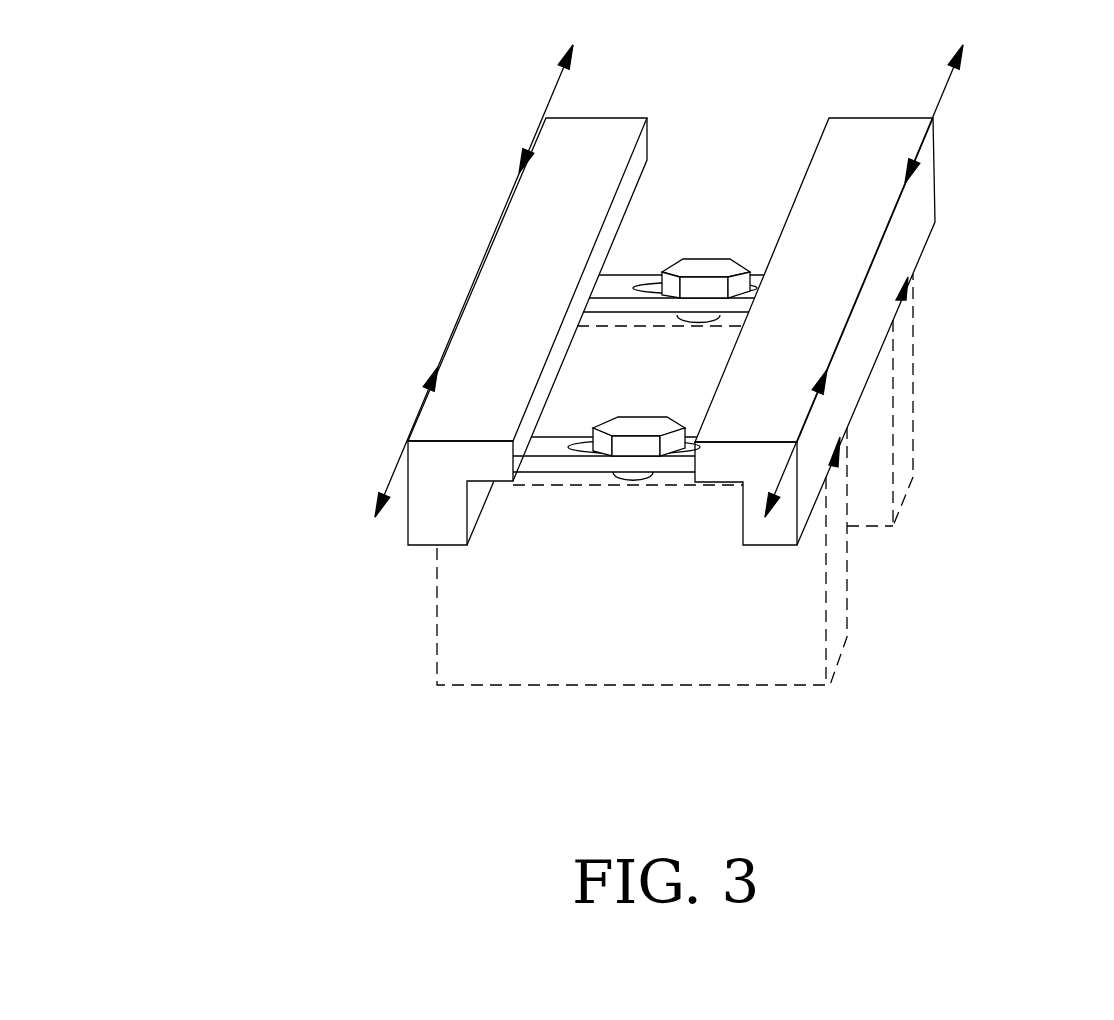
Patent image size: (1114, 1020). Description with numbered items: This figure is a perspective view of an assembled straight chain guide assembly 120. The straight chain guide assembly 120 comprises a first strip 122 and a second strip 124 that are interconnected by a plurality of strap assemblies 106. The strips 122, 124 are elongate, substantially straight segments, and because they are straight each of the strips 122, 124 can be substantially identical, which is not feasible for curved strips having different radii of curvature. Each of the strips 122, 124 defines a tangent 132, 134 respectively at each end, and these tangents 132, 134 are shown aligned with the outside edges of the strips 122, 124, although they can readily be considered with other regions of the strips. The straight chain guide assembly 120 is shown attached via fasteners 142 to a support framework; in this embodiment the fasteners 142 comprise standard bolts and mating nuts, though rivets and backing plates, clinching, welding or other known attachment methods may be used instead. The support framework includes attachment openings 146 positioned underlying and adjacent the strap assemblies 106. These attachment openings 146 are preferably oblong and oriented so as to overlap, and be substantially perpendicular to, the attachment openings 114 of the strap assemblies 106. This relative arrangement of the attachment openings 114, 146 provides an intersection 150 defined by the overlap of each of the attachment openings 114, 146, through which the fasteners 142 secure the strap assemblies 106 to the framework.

The straight chain guide assembly 120 is at (268, 138).
The first strip 122 is at (518, 270).
The second strip 124 is at (912, 241).
The tangent 132 is at (550, 88).
The tangent 134 is at (945, 88).
The strap assembly 106 is at (553, 462).
The attachment opening 114 is at (577, 440).
The fastener 142 is at (657, 425).
The attachment opening 146 is at (632, 480).
The intersection 150 is at (685, 453).